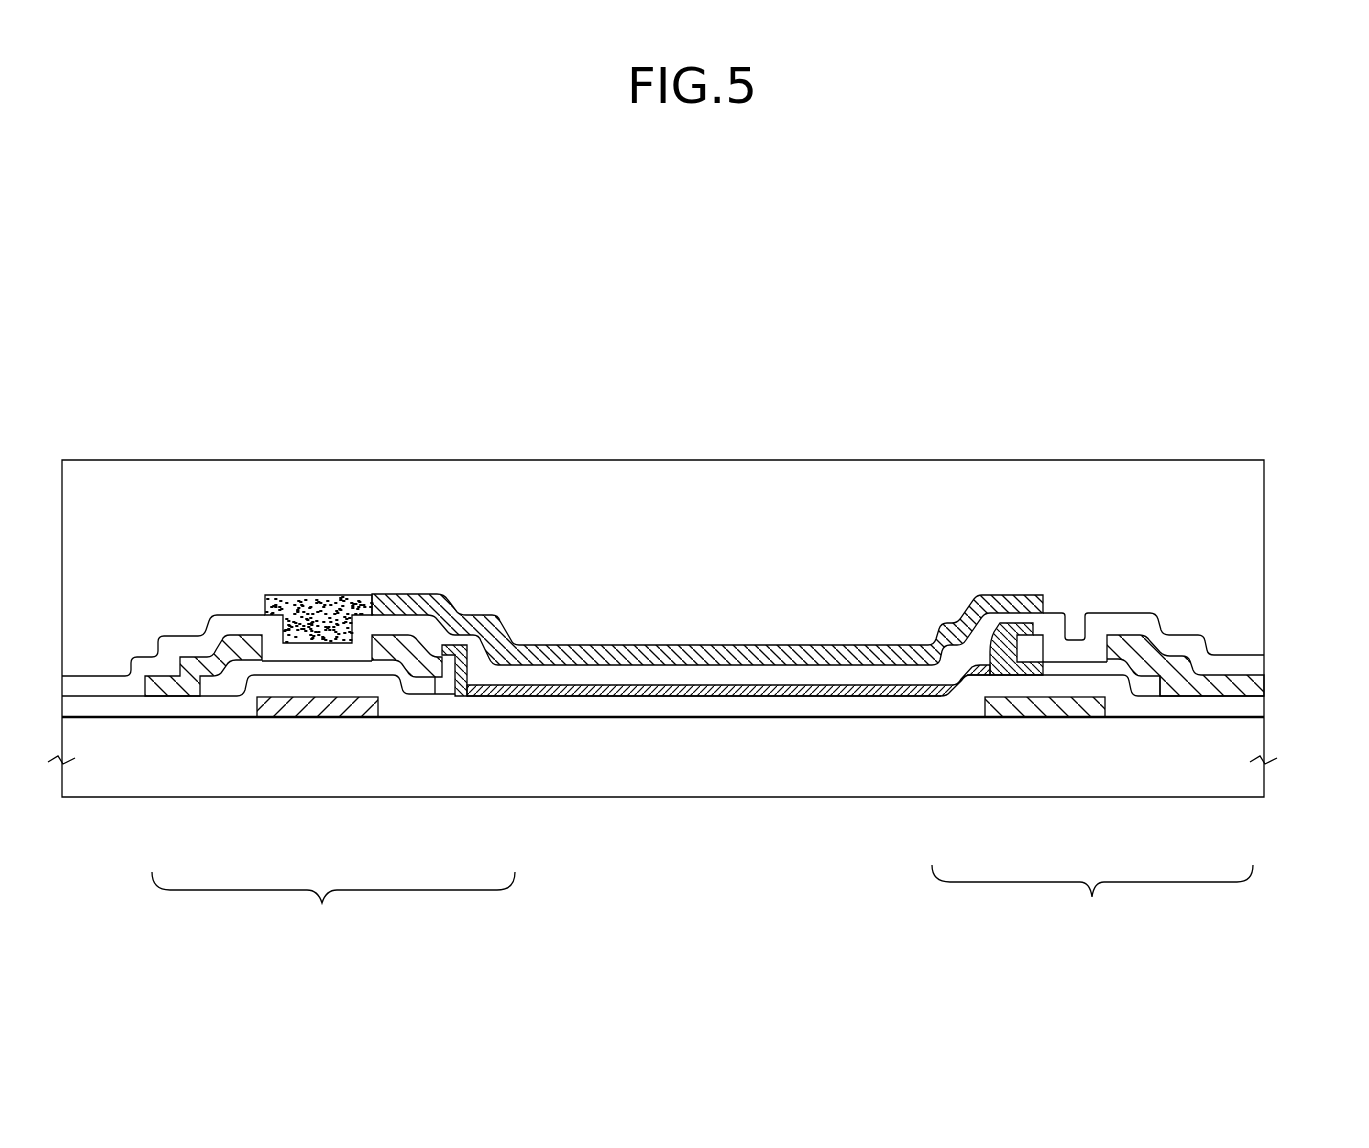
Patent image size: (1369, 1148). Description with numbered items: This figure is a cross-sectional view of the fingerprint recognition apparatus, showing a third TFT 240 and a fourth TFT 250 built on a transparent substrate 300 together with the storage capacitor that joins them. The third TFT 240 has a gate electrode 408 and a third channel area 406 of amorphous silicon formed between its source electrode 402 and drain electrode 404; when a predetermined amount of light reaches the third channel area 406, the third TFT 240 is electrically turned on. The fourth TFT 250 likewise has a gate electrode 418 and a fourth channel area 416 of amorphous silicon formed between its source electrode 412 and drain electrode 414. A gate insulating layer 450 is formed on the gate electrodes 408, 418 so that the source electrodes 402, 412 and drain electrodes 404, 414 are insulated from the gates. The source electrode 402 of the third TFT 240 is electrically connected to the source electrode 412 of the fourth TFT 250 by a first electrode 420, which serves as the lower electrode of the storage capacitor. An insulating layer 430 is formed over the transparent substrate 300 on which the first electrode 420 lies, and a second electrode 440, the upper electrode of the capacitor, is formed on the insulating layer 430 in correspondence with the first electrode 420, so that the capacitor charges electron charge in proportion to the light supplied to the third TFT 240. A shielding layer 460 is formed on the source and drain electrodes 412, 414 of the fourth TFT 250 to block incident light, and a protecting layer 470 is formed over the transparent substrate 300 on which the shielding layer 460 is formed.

The transparent substrate 300 is at (1255, 779).
The third TFT 240 is at (1092, 900).
The fourth TFT 250 is at (333, 909).
The source electrode 402 is at (1018, 663).
The drain electrode 404 is at (1210, 683).
The third channel area 406 is at (1145, 686).
The gate electrode 408 is at (1056, 700).
The source electrode 412 is at (456, 688).
The drain electrode 414 is at (168, 690).
The fourth channel area 416 is at (418, 683).
The gate electrode 418 is at (316, 700).
The first electrode 420 is at (691, 700).
The insulating layer 430 is at (771, 676).
The second electrode 440 is at (614, 662).
The gate insulating layer 450 is at (1255, 669).
The shielding layer 460 is at (316, 618).
The protecting layer 470 is at (1255, 554).